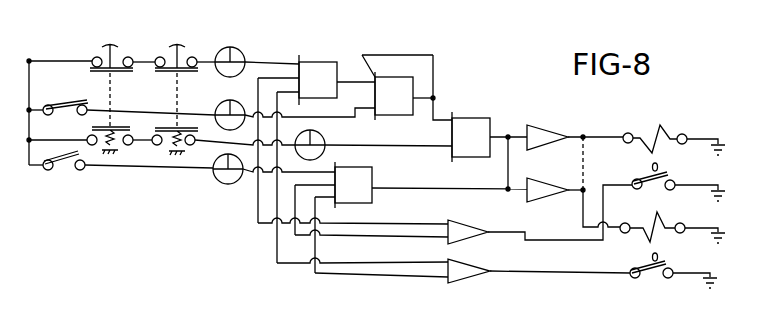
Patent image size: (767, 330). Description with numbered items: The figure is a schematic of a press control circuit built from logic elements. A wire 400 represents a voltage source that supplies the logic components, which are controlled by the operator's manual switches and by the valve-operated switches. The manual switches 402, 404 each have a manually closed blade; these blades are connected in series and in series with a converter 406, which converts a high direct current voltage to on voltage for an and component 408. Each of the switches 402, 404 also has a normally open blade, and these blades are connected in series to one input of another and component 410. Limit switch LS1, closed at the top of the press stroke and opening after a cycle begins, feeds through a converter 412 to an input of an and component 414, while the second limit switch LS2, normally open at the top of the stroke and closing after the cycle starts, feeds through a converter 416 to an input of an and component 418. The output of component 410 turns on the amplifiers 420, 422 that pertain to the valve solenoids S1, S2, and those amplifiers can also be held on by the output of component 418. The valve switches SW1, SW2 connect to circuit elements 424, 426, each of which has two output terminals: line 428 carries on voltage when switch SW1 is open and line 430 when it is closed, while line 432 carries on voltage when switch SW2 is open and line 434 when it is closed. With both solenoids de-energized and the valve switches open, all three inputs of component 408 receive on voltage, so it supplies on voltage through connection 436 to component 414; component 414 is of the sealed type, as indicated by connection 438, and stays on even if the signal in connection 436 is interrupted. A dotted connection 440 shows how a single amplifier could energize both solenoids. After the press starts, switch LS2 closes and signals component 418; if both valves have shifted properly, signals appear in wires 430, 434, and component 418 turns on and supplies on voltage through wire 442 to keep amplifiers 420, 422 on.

The wire 400 is at (31, 60).
The manual switch 402 is at (122, 43).
The manual switch 404 is at (188, 43).
The converter 406 is at (234, 51).
The and component 408 is at (322, 75).
The and component 410 is at (472, 128).
The converter 412 is at (223, 108).
The and component 414 is at (388, 106).
The converter 416 is at (220, 178).
The and component 418 is at (362, 188).
The amplifier 420 is at (542, 134).
The amplifier 422 is at (556, 179).
The circuit element 424 is at (463, 236).
The circuit element 426 is at (470, 274).
The line 428 is at (383, 223).
The line 430 is at (362, 237).
The line 432 is at (390, 265).
The line 434 is at (330, 275).
The connection 436 is at (362, 55).
The connection 438 is at (433, 55).
The connection 440 is at (583, 162).
The wire 442 is at (435, 189).
The limit switch LS1 is at (68, 105).
The limit switch LS2 is at (63, 173).
The valve solenoid S1 is at (667, 133).
The valve switch SW1 is at (672, 170).
The valve solenoid S2 is at (660, 225).
The valve switch SW2 is at (670, 262).